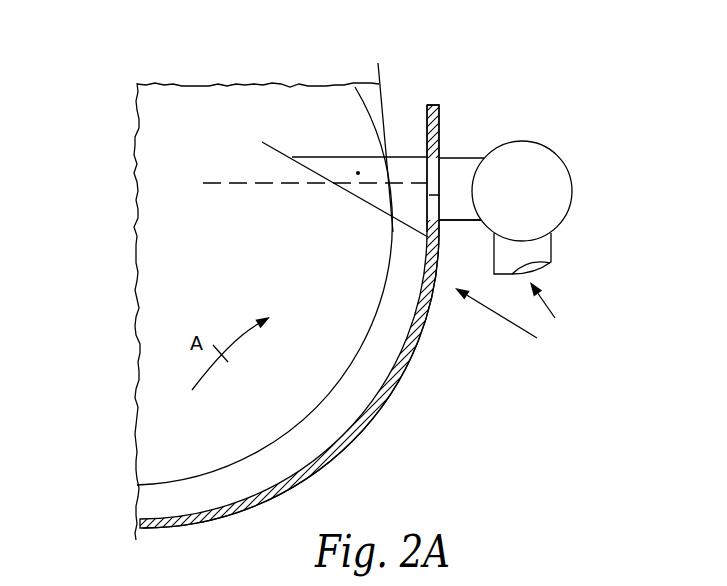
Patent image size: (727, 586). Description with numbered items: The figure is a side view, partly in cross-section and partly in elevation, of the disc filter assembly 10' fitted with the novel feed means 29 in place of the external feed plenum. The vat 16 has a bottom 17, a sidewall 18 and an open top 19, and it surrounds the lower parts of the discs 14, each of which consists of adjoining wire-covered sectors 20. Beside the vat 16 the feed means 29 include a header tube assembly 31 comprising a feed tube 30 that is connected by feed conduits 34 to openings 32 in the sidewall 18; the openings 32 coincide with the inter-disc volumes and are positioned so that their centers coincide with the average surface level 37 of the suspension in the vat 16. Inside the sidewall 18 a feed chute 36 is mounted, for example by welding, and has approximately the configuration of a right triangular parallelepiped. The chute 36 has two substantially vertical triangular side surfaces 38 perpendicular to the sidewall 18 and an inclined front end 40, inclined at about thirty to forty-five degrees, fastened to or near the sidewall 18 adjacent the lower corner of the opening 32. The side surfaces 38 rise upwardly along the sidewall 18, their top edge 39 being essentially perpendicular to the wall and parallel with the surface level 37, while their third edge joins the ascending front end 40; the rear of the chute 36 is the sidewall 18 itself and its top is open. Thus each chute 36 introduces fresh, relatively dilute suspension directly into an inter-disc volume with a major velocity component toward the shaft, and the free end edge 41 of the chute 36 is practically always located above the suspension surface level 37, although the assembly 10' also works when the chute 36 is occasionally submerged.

The disc filter assembly 10' is at (207, 47).
The discs 14 is at (107, 311).
The wire-covered sectors 20 is at (159, 300).
The vat 16 is at (327, 423).
The bottom 17 is at (155, 530).
The sidewall 18 is at (417, 344).
The open top 19 is at (436, 103).
The feed means 29 is at (517, 316).
The feed tube 30 is at (552, 198).
The header tube assembly 31 is at (546, 124).
The openings 32 is at (436, 192).
The feed conduits 34 is at (447, 212).
The feed chute 36 is at (407, 175).
The average surface level 37 is at (233, 185).
The side surfaces 38 is at (358, 172).
The top edge 39 is at (379, 132).
The inclined front end 40 is at (365, 201).
The free end edge 41 is at (334, 182).